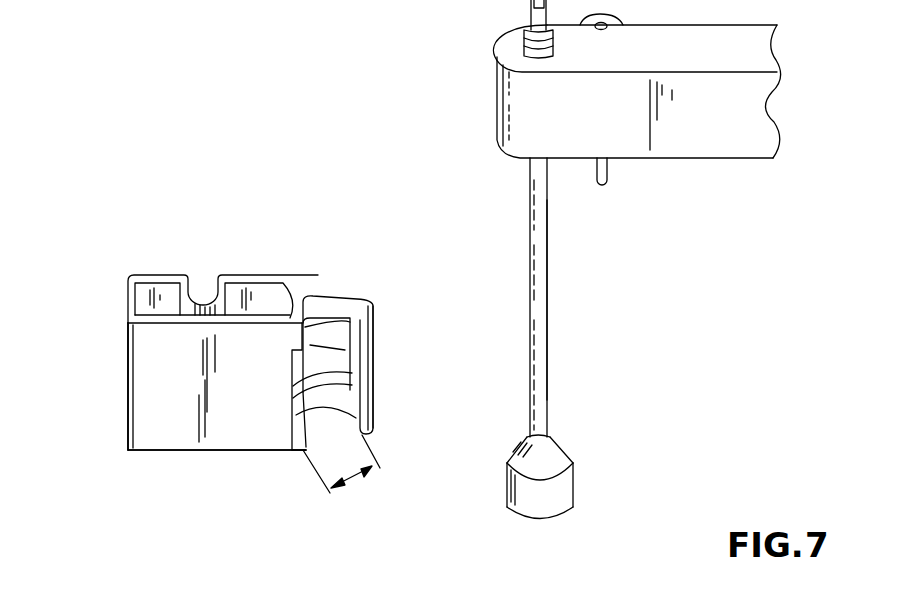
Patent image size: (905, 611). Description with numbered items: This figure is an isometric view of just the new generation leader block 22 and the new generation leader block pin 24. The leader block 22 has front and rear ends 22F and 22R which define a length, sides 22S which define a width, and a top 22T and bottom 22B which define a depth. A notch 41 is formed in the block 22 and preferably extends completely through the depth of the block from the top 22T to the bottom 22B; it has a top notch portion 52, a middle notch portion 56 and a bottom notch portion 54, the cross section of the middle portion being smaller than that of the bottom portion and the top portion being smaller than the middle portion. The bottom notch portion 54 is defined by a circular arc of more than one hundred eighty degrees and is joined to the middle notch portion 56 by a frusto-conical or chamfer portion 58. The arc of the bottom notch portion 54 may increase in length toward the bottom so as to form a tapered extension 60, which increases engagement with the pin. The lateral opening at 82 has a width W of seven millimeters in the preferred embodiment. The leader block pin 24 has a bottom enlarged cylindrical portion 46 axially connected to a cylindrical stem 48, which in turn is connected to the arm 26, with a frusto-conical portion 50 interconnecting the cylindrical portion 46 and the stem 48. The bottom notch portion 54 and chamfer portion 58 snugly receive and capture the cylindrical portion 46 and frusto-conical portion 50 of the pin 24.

The new generation leader block 22 is at (183, 417).
The top 22T is at (153, 275).
The sides 22S is at (258, 275).
The rear end 22R is at (128, 367).
The bottom 22B is at (225, 452).
The front end 22F is at (373, 312).
The leader block pin 24 is at (547, 237).
The arm 26 is at (740, 160).
The notch 41 is at (327, 357).
The bottom enlarged cylindrical portion 46 is at (574, 488).
The cylindrical stem 48 is at (548, 280).
The frusto-conical portion 50 is at (558, 450).
The top notch portion 52 is at (320, 305).
The bottom notch portion 54 is at (333, 402).
The middle notch portion 56 is at (328, 338).
The frusto-conical portion 58 is at (323, 380).
The tapered extension 60 is at (302, 452).
The lateral opening 82 is at (332, 438).
The width W is at (358, 472).